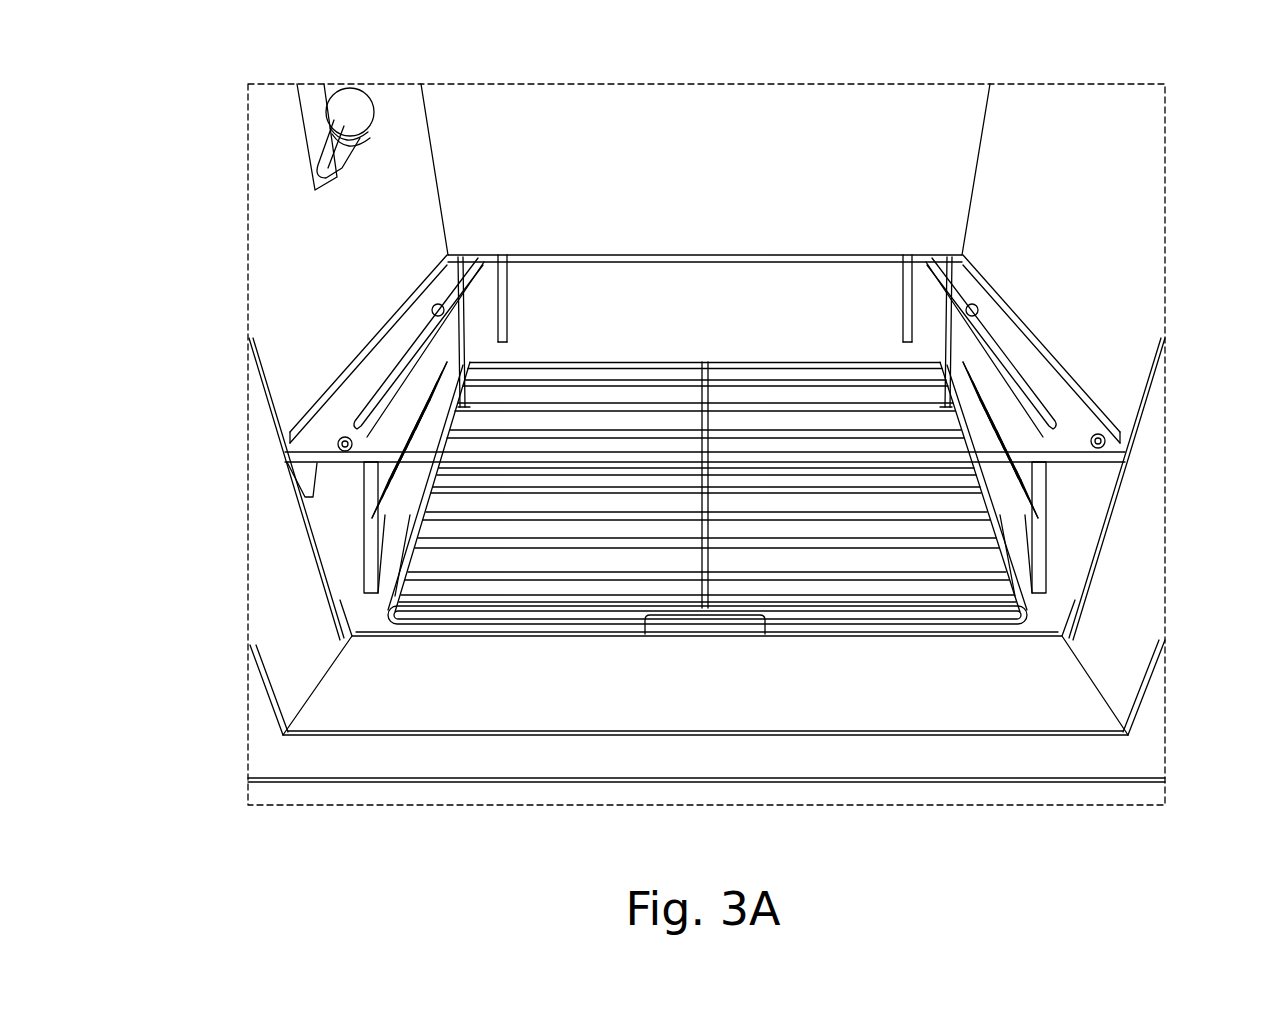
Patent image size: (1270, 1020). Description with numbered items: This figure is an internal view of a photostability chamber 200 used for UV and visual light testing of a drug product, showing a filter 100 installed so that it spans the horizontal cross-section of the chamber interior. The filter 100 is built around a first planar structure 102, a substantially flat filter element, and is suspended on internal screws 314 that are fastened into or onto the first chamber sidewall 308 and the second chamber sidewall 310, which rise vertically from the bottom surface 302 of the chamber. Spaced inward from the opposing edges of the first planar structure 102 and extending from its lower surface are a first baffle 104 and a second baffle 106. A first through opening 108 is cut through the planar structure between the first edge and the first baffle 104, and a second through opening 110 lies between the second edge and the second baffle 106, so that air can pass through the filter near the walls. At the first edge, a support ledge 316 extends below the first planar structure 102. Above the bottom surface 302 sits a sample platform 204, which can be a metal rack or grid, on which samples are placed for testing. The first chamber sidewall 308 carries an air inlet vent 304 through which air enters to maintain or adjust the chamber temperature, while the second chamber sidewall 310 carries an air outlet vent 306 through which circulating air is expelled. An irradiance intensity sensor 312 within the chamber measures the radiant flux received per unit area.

The filter 100 is at (707, 519).
The first planar structure 102 is at (793, 345).
The first baffle 104 is at (1040, 545).
The second baffle 106 is at (395, 588).
The first through opening 108 is at (1045, 406).
The second through opening 110 is at (408, 360).
The photostability chamber 200 is at (840, 80).
The sample platform 204 is at (495, 578).
The bottom surface 302 is at (786, 672).
The air inlet vent 304 is at (1028, 492).
The air outlet vent 306 is at (378, 520).
The first chamber sidewall 308 is at (1052, 294).
The second chamber sidewall 310 is at (325, 234).
The irradiance intensity sensor 312 is at (327, 142).
The internal screws 314 is at (345, 447).
The support ledge 316 is at (356, 499).